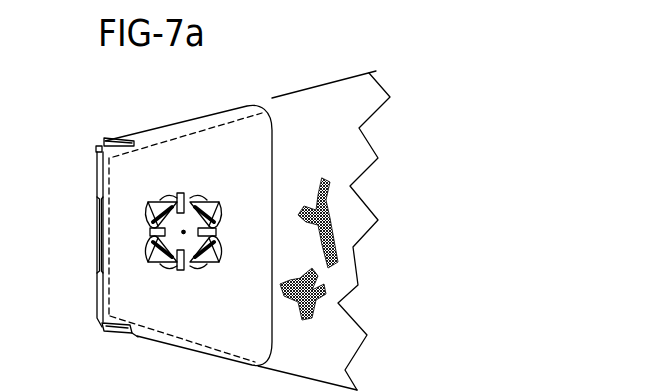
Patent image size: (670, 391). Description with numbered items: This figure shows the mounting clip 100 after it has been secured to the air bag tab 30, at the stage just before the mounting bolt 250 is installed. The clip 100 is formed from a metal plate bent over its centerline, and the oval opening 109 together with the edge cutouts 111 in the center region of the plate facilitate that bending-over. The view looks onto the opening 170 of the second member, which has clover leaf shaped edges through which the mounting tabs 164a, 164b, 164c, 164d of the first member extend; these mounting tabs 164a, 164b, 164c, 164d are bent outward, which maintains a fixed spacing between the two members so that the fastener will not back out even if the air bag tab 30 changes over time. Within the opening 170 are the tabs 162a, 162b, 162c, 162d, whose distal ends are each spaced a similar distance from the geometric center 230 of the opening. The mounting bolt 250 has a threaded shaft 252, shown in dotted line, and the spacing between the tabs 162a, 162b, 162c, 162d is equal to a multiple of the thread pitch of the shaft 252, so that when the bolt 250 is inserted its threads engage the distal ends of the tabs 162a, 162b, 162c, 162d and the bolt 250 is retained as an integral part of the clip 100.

The air bag tab 30 is at (338, 78).
The mounting clip 100 is at (204, 117).
The oval opening 109 is at (97, 243).
The cutout 111 is at (97, 148).
The tab 162a is at (216, 231).
The tab 162b is at (182, 196).
The tab 162c is at (152, 230).
The tab 162d is at (182, 271).
The mounting tab 164a is at (208, 203).
The mounting tab 164b is at (152, 203).
The mounting tab 164c is at (152, 263).
The mounting tab 164d is at (206, 263).
The opening 170 is at (182, 231).
The center of opening 230 is at (176, 199).
The mounting bolt 250 is at (178, 236).
The threaded shaft 252 is at (222, 212).